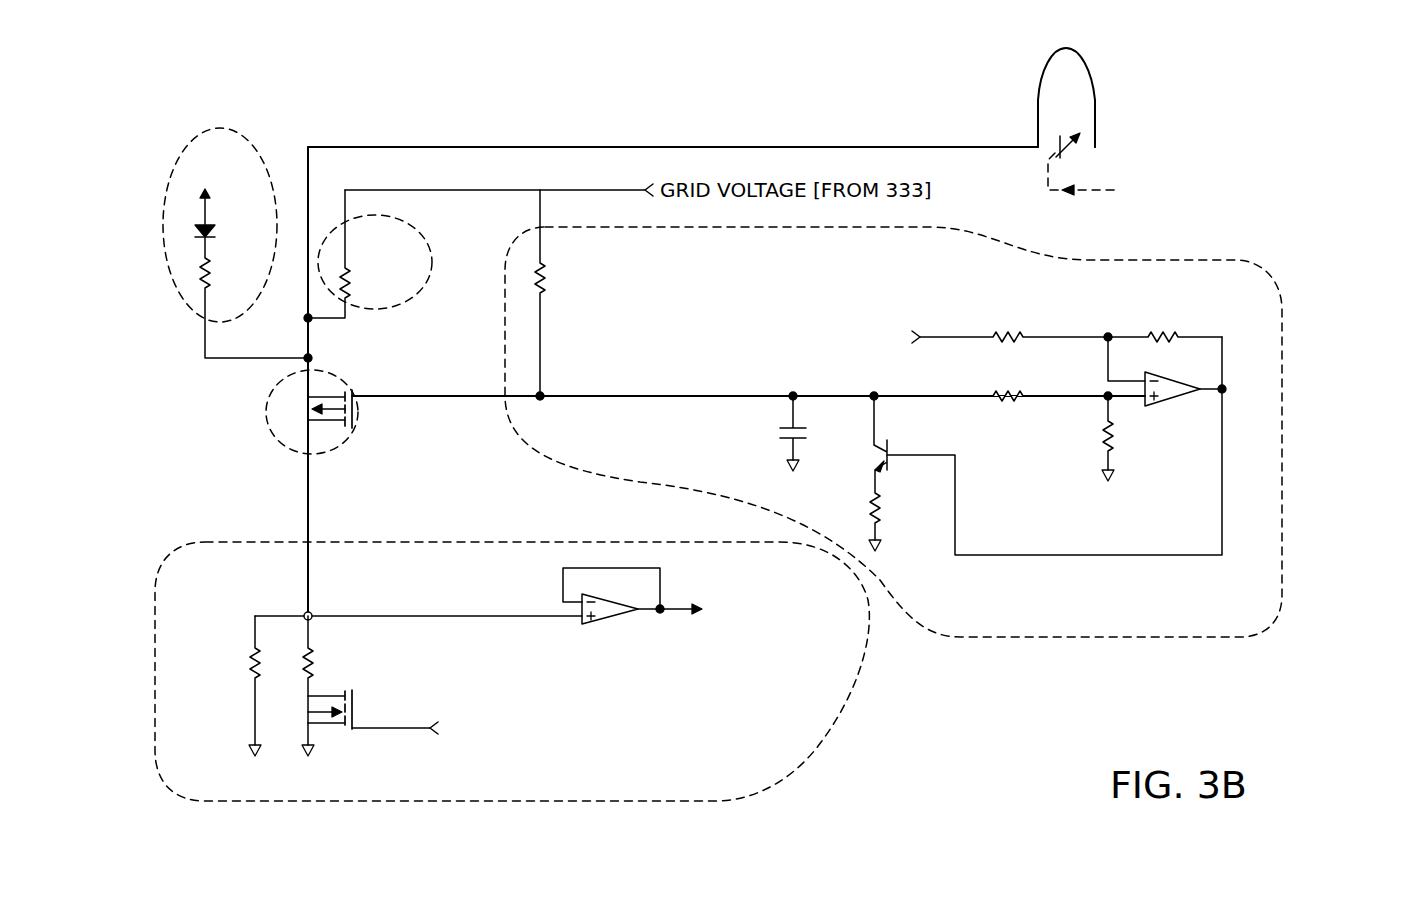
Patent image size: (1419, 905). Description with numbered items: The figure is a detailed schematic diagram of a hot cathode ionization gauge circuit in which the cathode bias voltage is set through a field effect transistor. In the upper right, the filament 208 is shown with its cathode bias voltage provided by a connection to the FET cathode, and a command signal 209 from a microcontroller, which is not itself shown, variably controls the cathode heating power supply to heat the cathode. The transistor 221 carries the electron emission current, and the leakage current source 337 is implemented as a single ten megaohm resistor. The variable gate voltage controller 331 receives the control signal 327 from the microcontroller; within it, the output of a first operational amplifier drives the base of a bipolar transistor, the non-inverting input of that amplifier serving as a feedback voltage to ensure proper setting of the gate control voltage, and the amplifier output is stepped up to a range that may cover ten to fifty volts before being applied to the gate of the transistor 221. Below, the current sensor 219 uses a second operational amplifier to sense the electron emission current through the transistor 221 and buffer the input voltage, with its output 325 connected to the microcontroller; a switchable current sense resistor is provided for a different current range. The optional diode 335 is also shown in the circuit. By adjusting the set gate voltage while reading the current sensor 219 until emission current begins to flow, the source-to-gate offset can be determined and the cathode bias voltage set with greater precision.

The filament 208 is at (1048, 53).
The command signal 209 is at (1078, 187).
The current sensor 219 is at (512, 671).
The transistor 221 is at (266, 413).
The output 325 is at (678, 612).
The control signal 327 is at (831, 320).
The variable gate voltage controller 331 is at (893, 440).
The diode 335 is at (218, 126).
The leakage current source 337 is at (412, 232).